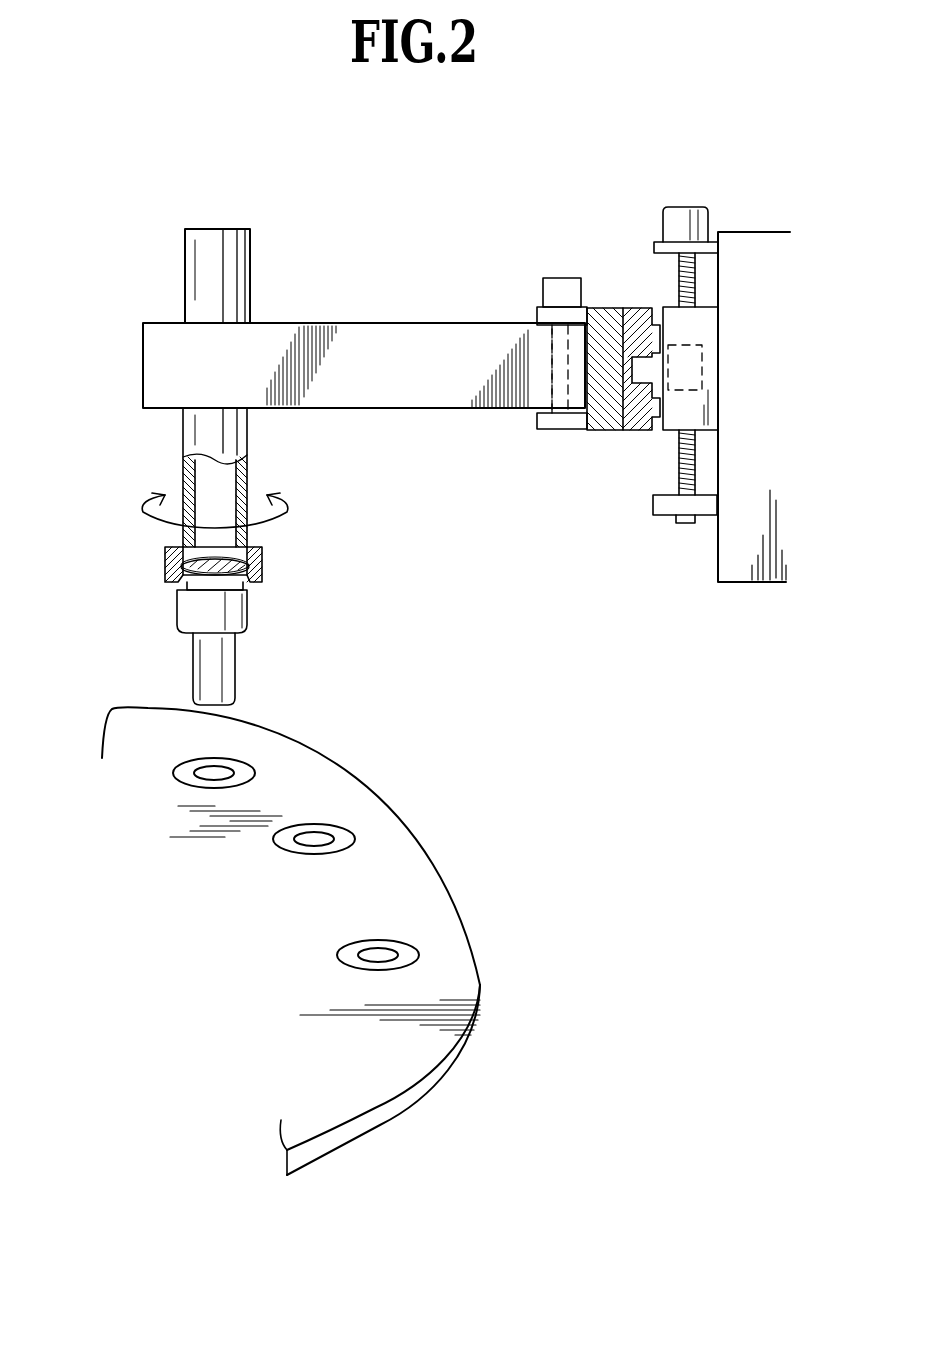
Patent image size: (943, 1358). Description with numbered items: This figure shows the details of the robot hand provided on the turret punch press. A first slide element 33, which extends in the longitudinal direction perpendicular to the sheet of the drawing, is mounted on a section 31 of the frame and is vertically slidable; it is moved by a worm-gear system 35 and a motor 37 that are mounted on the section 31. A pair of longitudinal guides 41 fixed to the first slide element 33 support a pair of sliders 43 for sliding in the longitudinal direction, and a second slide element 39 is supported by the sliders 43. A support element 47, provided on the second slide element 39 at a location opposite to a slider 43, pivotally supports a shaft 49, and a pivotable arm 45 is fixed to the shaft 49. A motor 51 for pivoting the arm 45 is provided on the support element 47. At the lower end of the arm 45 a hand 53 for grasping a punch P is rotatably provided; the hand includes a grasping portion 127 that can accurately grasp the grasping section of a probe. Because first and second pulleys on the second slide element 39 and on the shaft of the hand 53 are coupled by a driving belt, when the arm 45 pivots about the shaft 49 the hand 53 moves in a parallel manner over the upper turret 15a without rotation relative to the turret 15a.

The upper turret 15a is at (419, 848).
The section of the frame 31 is at (745, 560).
The first slide element 33 is at (720, 370).
The worm-gear system 35 is at (705, 345).
The motor 37 is at (690, 205).
The second slide element 39 is at (607, 420).
The longitudinal guide 41 is at (668, 390).
The sliders 43 is at (636, 330).
The pivotable arm 45 is at (374, 338).
The support element 47 is at (550, 428).
The shaft 49 is at (550, 385).
The motor 51 is at (556, 290).
The hand 53 is at (172, 468).
The grasping portion 127 is at (262, 560).
The punch P is at (229, 665).